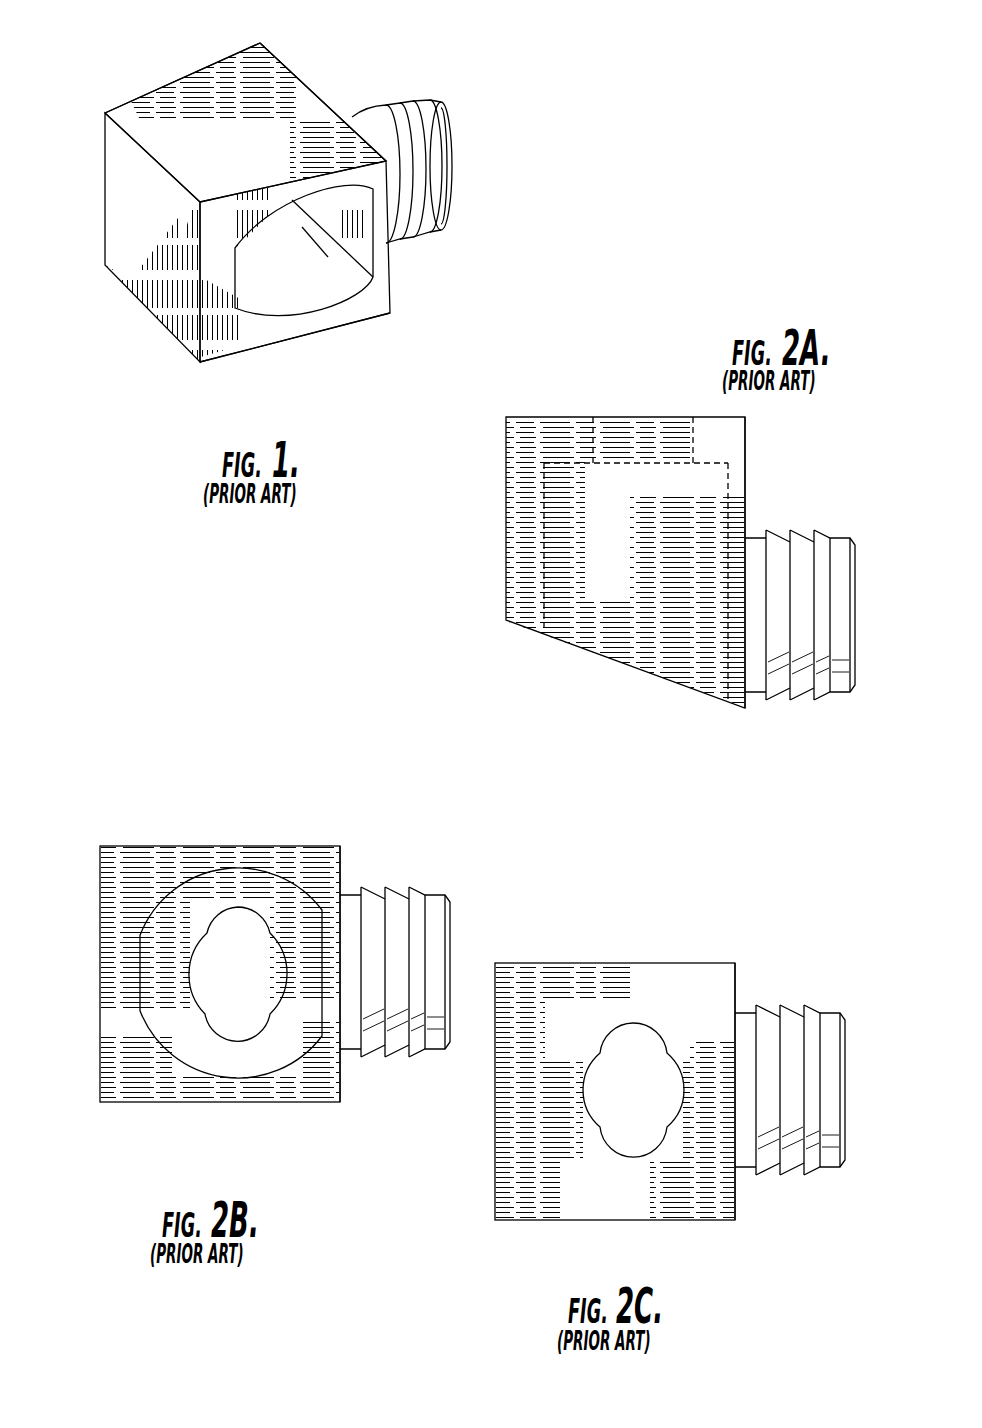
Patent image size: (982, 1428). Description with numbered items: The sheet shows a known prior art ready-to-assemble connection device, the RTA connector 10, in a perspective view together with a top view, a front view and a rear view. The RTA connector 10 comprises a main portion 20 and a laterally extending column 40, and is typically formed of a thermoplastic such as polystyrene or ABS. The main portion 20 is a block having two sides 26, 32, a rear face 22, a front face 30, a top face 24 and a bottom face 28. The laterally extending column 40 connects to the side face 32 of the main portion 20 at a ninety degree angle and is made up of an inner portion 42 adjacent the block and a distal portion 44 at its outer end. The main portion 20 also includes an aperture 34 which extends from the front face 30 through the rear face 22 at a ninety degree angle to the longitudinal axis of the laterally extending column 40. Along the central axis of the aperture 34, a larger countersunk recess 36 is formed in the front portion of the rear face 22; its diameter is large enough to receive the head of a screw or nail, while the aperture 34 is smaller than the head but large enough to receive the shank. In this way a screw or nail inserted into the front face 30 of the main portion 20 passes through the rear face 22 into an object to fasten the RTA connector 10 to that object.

In FIG. 1, the RTA connector 10 is at (289, 244).
In FIG. 1, the main portion 20 is at (248, 211).
In FIG. 2A, the main portion 20 is at (660, 513).
In FIG. 2B, the main portion 20 is at (256, 924).
In FIG. 2C, the main portion 20 is at (652, 1040).
In FIG. 1, the rear face 22 is at (127, 84).
In FIG. 2C, the rear face 22 is at (512, 1005).
In FIG. 1, the top face 24 is at (246, 122).
In FIG. 2A, the top face 24 is at (584, 566).
In FIG. 1, the side 26 is at (152, 237).
In FIG. 1, the bottom face 28 is at (182, 350).
In FIG. 1, the front face 30 is at (333, 269).
In FIG. 2B, the front face 30 is at (116, 886).
In FIG. 1, the side face 32 is at (321, 92).
In FIG. 2A, the side face 32 is at (750, 482).
In FIG. 2B, the side face 32 is at (345, 867).
In FIG. 2C, the side face 32 is at (745, 983).
In FIG. 1, the aperture 34 is at (304, 250).
In FIG. 2A, the aperture 34 is at (636, 559).
In FIG. 2B, the aperture 34 is at (226, 986).
In FIG. 2C, the aperture 34 is at (622, 1101).
In FIG. 2B, the countersunk recess 36 is at (177, 1053).
In FIG. 1, the laterally extending column 40 is at (450, 171).
In FIG. 2A, the laterally extending column 40 is at (821, 564).
In FIG. 2B, the laterally extending column 40 is at (410, 927).
In FIG. 2C, the laterally extending column 40 is at (807, 1044).
In FIG. 1, the inner portion 42 is at (389, 172).
In FIG. 2A, the inner portion 42 is at (783, 615).
In FIG. 2B, the inner portion 42 is at (379, 972).
In FIG. 2C, the inner portion 42 is at (774, 1090).
In FIG. 1, the distal portion 44 is at (432, 168).
In FIG. 2A, the distal portion 44 is at (834, 615).
In FIG. 2B, the distal portion 44 is at (429, 972).
In FIG. 2C, the distal portion 44 is at (824, 1090).